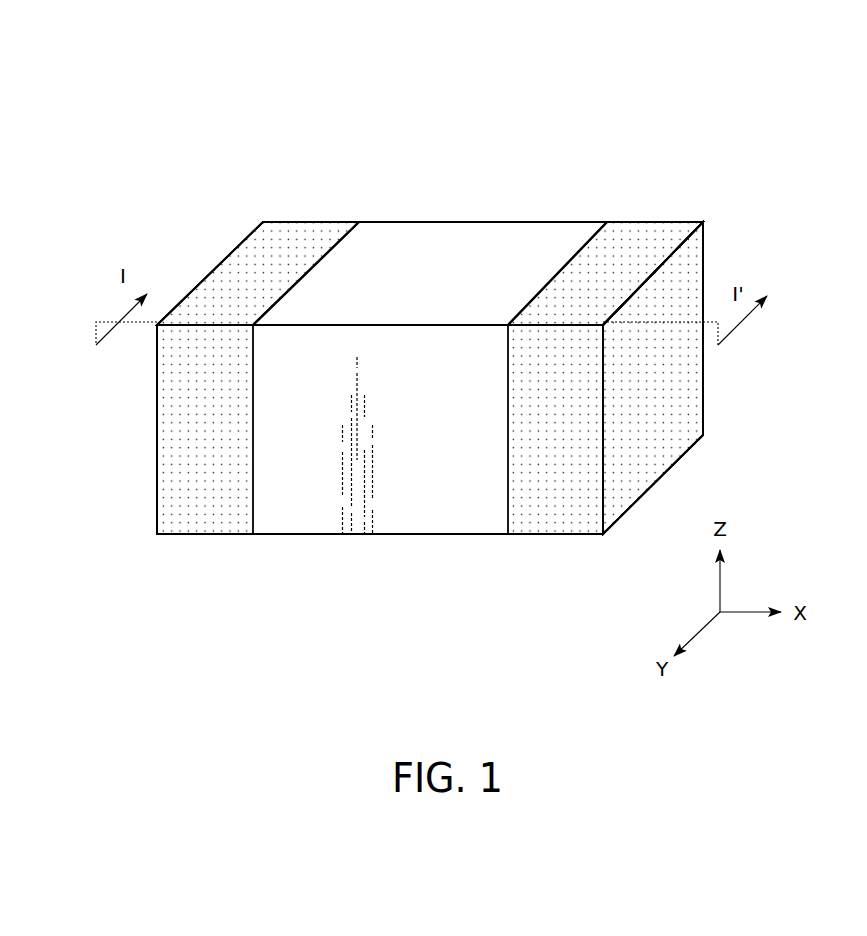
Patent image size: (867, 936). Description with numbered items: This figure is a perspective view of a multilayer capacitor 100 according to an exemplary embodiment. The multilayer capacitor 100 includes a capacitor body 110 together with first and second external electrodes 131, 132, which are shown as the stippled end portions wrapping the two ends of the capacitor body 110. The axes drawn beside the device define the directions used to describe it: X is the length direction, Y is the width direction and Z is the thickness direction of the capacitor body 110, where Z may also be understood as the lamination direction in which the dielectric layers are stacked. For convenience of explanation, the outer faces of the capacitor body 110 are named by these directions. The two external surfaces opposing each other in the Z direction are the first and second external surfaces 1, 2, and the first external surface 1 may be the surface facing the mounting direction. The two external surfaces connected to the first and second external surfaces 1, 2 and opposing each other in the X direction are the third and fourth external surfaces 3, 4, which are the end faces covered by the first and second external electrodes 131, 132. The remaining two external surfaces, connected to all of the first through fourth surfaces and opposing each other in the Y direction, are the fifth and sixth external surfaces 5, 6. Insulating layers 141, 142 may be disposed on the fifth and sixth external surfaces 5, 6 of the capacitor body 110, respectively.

The multilayer capacitor 100 is at (481, 30).
The capacitor body 110 is at (503, 255).
The first external electrode 131 is at (258, 325).
The second external electrode 132 is at (605, 326).
The insulating layer 141 is at (300, 508).
The insulating layer 142 is at (442, 222).
The first external surface 1 is at (410, 502).
The second external surface 2 is at (553, 246).
The third external surface 3 is at (153, 422).
The fourth external surface 4 is at (674, 380).
The fifth external surface 5 is at (491, 502).
The sixth external surface 6 is at (378, 220).